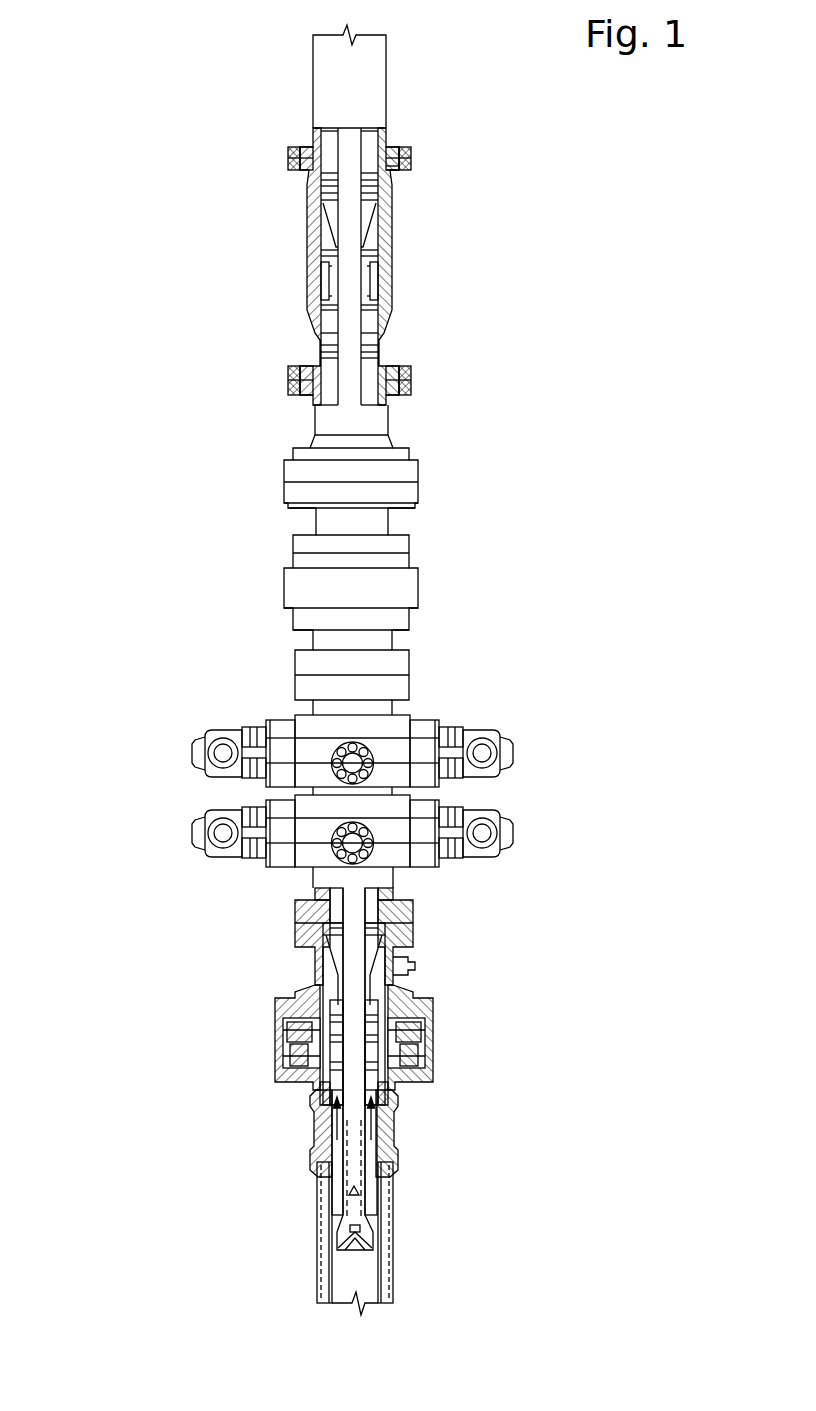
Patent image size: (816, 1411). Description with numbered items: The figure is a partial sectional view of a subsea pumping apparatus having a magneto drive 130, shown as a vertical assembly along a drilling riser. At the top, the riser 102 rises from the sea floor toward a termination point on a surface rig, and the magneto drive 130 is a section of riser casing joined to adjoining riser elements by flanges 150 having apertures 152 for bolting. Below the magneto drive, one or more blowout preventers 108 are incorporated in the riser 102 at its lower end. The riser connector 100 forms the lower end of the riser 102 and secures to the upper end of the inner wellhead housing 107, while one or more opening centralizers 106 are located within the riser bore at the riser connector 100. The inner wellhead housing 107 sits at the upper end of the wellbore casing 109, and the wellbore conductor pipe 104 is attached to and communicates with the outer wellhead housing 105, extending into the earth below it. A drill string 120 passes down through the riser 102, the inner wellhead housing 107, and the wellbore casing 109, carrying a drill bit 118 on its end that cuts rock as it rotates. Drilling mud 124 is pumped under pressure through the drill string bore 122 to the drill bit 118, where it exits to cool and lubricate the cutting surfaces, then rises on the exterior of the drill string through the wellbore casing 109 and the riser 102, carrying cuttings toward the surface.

The riser connector 100 is at (433, 1027).
The riser 102 is at (312, 77).
The wellbore conductor pipe 104 is at (395, 1258).
The outer wellhead housing 105 is at (310, 1158).
The opening centralizer 106 is at (337, 973).
The inner wellhead housing 107 is at (390, 1085).
The blowout preventer 108 is at (168, 658).
The wellbore casing 109 is at (320, 1216).
The drill bit 118 is at (345, 1252).
The drill string 120 is at (368, 1200).
The drill string bore 122 is at (350, 1192).
The drilling mud 124 is at (327, 1130).
The magneto drive 130 is at (207, 221).
The flange 150 is at (410, 165).
The aperture 152 is at (396, 168).